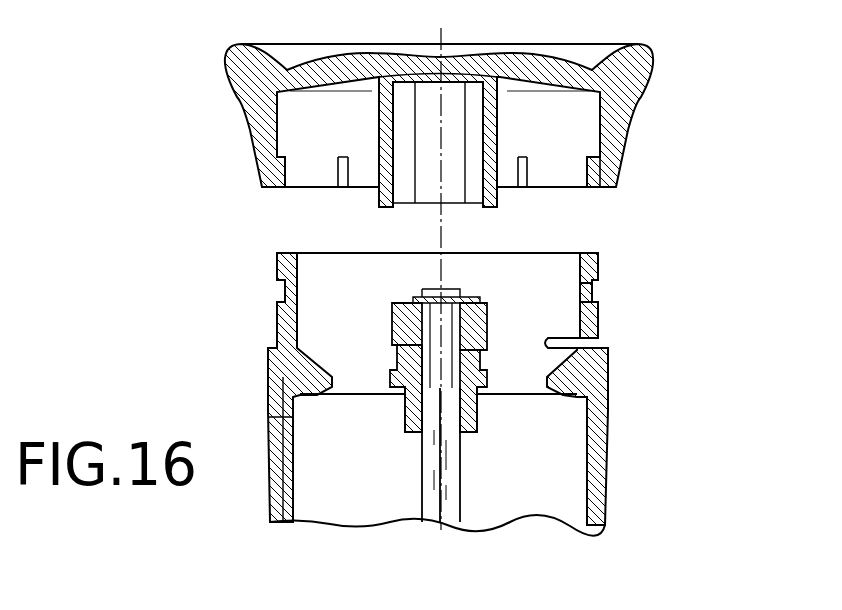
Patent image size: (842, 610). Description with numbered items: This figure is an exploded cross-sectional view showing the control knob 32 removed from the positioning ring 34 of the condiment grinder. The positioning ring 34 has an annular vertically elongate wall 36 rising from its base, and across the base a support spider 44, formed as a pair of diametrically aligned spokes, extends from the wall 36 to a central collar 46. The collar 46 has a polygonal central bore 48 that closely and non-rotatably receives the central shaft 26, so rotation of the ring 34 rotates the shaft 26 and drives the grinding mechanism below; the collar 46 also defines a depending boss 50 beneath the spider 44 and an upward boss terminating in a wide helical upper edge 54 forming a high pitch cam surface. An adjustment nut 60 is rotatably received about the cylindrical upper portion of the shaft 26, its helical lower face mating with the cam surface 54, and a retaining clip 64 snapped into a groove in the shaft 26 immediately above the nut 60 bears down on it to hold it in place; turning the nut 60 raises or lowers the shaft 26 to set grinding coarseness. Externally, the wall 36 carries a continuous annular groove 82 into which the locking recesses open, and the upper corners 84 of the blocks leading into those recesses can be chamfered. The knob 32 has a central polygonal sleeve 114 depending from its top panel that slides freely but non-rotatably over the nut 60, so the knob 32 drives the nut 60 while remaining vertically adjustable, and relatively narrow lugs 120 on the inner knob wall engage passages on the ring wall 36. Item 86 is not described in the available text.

The central shaft 26 is at (462, 490).
The control knob 32 is at (474, 125).
The positioning ring 34 is at (429, 373).
The annular wall 36 is at (360, 264).
The support spider 44 is at (435, 373).
The central collar 46 is at (397, 406).
The central bore 48 is at (423, 433).
The depending boss 50 is at (464, 414).
The helical upper edge 54 is at (479, 344).
The adjustment nut 60 is at (492, 317).
The retaining clip 64 is at (453, 290).
The annular groove 82 is at (595, 296).
The upper corners 84 is at (600, 334).
The upper rib 86 is at (599, 264).
The sleeve 114 is at (376, 133).
The narrow lugs 120 is at (600, 170).